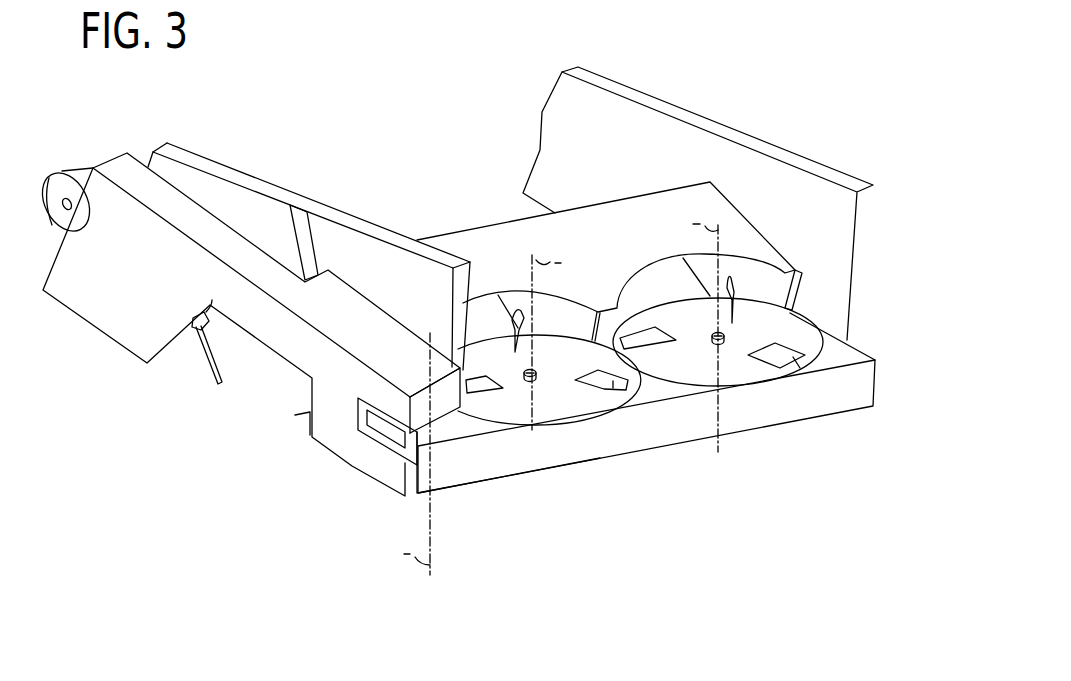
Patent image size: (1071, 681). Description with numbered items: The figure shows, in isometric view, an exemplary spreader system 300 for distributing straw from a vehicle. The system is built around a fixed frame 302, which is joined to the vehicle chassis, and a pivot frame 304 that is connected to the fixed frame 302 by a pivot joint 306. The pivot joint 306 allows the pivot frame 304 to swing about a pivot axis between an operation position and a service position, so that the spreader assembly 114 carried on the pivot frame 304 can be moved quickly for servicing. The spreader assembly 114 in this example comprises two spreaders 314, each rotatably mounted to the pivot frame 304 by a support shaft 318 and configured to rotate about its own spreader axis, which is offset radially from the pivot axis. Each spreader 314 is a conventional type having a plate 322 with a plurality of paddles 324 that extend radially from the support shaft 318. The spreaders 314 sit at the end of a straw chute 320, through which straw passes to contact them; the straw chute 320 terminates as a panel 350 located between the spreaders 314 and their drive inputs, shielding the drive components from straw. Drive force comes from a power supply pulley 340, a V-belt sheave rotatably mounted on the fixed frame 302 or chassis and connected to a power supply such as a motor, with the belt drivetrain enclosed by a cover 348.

The spreader system 300 is at (772, 96).
The power supply pulley 340 is at (57, 190).
The fixed frame 302 is at (349, 247).
The straw chute 320 is at (503, 240).
The plate 322 is at (484, 345).
The support shaft 318 is at (806, 357).
The spreader 314 is at (581, 402).
The paddles 324 is at (615, 383).
The panel 350 is at (652, 383).
The pivot frame 304 is at (482, 462).
The pivot joint 306 is at (388, 470).
The cover 348 is at (297, 342).
The spreader assembly 114 is at (655, 507).